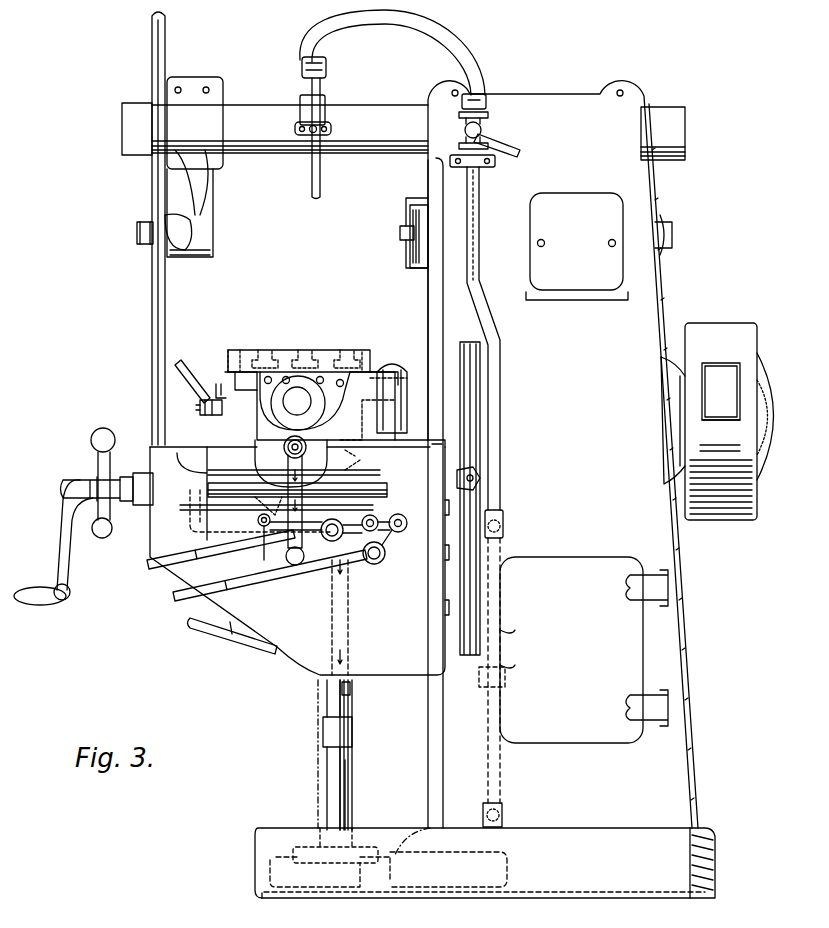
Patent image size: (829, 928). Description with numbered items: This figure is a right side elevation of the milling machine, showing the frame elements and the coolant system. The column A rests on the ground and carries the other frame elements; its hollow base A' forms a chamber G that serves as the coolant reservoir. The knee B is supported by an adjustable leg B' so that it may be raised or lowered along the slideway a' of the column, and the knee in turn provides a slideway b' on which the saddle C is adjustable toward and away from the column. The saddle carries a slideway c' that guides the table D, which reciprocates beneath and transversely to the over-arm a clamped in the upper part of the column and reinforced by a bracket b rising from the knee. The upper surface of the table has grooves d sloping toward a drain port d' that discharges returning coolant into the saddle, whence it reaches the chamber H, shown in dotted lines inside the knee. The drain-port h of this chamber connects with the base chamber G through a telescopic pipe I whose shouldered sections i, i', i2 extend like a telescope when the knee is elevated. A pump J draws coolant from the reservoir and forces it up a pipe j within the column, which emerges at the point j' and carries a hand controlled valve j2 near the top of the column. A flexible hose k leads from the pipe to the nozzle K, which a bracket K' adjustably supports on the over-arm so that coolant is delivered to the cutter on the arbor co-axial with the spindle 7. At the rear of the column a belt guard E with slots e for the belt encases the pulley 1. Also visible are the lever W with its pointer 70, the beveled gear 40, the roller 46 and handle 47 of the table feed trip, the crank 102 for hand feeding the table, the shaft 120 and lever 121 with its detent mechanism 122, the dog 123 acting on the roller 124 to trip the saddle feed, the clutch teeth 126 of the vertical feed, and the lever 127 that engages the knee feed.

The column A is at (563, 454).
The base A' is at (485, 863).
The over-arm a is at (403, 131).
The slideway a' is at (416, 300).
The bracket b is at (180, 228).
The slideway b' is at (411, 429).
The knee B is at (409, 570).
The adjustable leg B' is at (311, 755).
The saddle C is at (297, 547).
The slideway c' is at (291, 401).
The table D is at (311, 382).
The grooves d is at (308, 348).
The drain port d' is at (397, 398).
The belt guard E is at (715, 323).
The slots e is at (727, 420).
The pulley 1 is at (721, 391).
The chamber G is at (420, 875).
The chamber H is at (190, 532).
The drain-port h is at (347, 617).
The telescopic pipe I is at (352, 745).
The pipe section i is at (353, 691).
The pipe section i' is at (347, 730).
The pipe section i2 is at (352, 787).
The pump J is at (345, 875).
The pipe j is at (454, 511).
The point of emergence j' is at (502, 524).
The hand controlled valve j2 is at (482, 130).
The nozzle K is at (320, 128).
The bracket K' is at (324, 108).
The flexible hose k is at (448, 62).
The lever W is at (230, 634).
The spindle 7 is at (406, 209).
The beveled gear 40 is at (216, 386).
The roller 46 is at (208, 416).
The operating handle 47 is at (182, 362).
The pointer 70 is at (229, 625).
The crank 102 is at (297, 565).
The shaft 120 is at (378, 518).
The lever 121 is at (147, 564).
The detent mechanism 122 is at (332, 522).
The dog 123 is at (274, 537).
The roller 124 is at (279, 555).
The clutch teeth 126 is at (400, 531).
The lever 127 is at (270, 576).